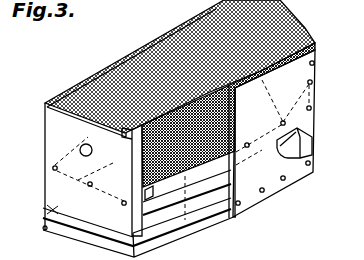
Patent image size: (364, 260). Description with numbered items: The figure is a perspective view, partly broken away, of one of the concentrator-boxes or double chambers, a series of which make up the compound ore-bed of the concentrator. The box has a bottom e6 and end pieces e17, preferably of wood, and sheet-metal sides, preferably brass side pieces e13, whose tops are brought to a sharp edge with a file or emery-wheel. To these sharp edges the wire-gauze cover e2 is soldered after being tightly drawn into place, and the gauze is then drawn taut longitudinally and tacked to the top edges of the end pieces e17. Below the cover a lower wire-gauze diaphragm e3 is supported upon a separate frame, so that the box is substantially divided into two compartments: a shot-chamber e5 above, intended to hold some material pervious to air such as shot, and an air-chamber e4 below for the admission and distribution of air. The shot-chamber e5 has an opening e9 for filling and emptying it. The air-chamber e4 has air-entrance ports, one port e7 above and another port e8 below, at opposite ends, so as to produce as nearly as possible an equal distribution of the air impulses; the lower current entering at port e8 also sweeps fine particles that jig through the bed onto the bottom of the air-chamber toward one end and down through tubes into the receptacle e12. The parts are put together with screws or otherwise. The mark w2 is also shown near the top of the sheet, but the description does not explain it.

The wire-gauze cover e2 is at (180, 68).
The lower wire-gauze diaphragm e3 is at (207, 152).
The air-chamber e4 is at (187, 195).
The shot-chamber e5 is at (134, 134).
The bottom e6 is at (168, 242).
The upper air-entrance port e7 is at (308, 129).
The lower air-entrance port e8 is at (60, 209).
The opening e9 is at (80, 151).
The receptacle e12 is at (298, 91).
The brass side pieces e13 is at (272, 134).
The end pieces e17 is at (120, 203).
The adjacent part w2 is at (339, 6).